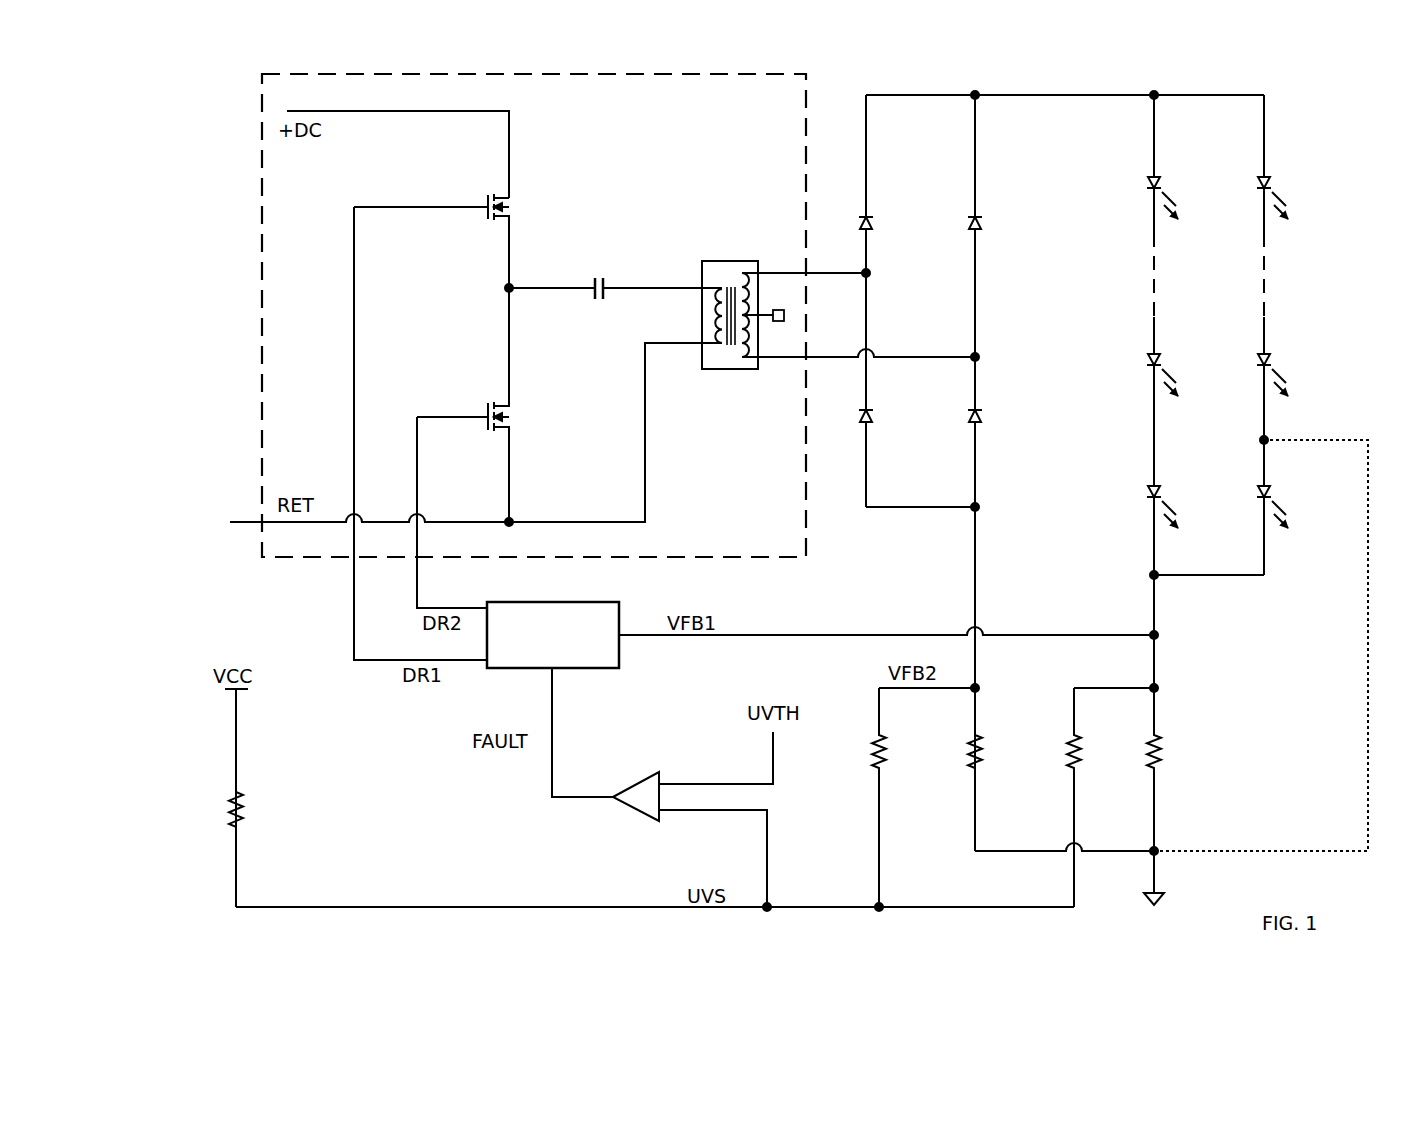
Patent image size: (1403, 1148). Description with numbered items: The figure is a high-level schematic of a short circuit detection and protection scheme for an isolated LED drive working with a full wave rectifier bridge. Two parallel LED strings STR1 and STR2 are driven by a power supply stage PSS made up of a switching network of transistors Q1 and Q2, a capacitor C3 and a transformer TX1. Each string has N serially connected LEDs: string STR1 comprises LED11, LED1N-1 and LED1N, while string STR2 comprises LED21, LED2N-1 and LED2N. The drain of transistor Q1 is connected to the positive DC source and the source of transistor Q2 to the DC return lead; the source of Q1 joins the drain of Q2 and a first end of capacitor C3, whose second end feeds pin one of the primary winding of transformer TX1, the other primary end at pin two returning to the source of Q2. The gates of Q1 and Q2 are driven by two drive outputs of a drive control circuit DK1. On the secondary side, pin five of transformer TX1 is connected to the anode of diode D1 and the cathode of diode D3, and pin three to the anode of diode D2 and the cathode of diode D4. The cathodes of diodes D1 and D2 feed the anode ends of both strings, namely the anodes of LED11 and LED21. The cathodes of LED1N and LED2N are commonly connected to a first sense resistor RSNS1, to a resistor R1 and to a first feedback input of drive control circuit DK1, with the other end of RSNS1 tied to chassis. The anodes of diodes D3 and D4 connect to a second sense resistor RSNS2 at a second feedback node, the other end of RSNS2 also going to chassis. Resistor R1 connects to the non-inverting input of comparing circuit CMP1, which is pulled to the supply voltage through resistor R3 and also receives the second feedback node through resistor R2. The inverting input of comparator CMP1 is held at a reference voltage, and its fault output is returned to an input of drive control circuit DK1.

The power supply stage PSS is at (262, 297).
The transistor Q1 is at (488, 190).
The transistor Q2 is at (488, 398).
The capacitor C3 is at (598, 272).
The transformer TX1 is at (728, 260).
The diode D1 is at (876, 222).
The diode D2 is at (986, 222).
The diode D3 is at (876, 415).
The diode D4 is at (986, 415).
The LED string STR1 is at (1147, 298).
The LED string STR2 is at (1257, 298).
The LED LED11 is at (1147, 181).
The LED LED21 is at (1257, 181).
The LED LED1N-1 is at (1147, 358).
The LED LED2N-1 is at (1257, 358).
The LED LED1N is at (1147, 491).
The LED LED2N is at (1257, 491).
The resistor R1 is at (1085, 752).
The resistor R2 is at (895, 752).
The resistor R3 is at (248, 817).
The first sense resistor RSNS1 is at (1165, 752).
The second sense resistor RSNS2 is at (1027, 764).
The drive control circuit DK1 is at (555, 602).
The comparing circuit CMP1 is at (640, 813).